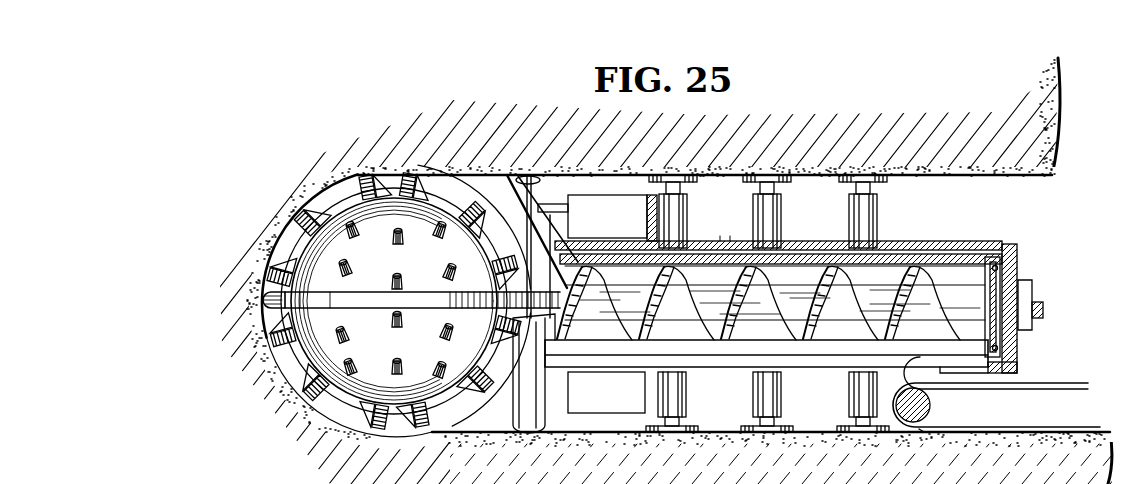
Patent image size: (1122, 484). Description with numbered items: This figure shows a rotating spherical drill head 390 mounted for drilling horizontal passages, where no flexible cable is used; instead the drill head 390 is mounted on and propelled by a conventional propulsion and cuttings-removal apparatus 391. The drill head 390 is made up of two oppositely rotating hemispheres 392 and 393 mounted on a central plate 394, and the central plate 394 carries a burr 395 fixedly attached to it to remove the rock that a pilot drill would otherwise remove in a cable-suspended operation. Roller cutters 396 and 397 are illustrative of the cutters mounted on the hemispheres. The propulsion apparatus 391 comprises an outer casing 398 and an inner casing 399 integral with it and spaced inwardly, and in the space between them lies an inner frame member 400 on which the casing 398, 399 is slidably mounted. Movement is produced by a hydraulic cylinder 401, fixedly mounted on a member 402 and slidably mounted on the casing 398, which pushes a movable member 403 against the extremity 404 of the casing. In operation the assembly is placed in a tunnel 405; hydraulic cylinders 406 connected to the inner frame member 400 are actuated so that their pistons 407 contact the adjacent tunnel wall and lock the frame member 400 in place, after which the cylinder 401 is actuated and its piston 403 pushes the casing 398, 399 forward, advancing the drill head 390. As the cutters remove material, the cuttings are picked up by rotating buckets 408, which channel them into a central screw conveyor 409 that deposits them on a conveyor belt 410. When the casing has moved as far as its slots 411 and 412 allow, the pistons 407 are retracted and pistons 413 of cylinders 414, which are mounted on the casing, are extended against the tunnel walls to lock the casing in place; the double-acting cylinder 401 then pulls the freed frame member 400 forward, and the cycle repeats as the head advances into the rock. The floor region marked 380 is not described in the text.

The mine floor 380 is at (547, 481).
The spherical drill head 390 is at (366, 306).
The propulsion and cuttings-removal apparatus 391 is at (803, 291).
The hemisphere 392 is at (264, 248).
The hemisphere 393 is at (427, 349).
The central plate 394 is at (364, 306).
The burr 395 is at (266, 312).
The cutter 396 is at (446, 266).
The cutter 397 is at (376, 368).
The outer casing 398 is at (796, 243).
The inner casing 399 is at (824, 270).
The inner frame member 400 is at (908, 246).
The hydraulic cylinder 401 is at (621, 226).
The member 402 is at (651, 200).
The movable member 403 is at (548, 208).
The extremity of casing 404 is at (549, 200).
The tunnel 405 is at (1025, 172).
The hydraulic cylinder 406 is at (760, 305).
The piston 407 is at (760, 305).
The rotating bucket 408 is at (510, 175).
The central screw conveyor 409 is at (771, 303).
The conveyor belt 410 is at (1054, 384).
The slot 411 is at (728, 240).
The slot 412 is at (932, 245).
The piston 413 is at (767, 303).
The hydraulic cylinder 414 is at (787, 205).